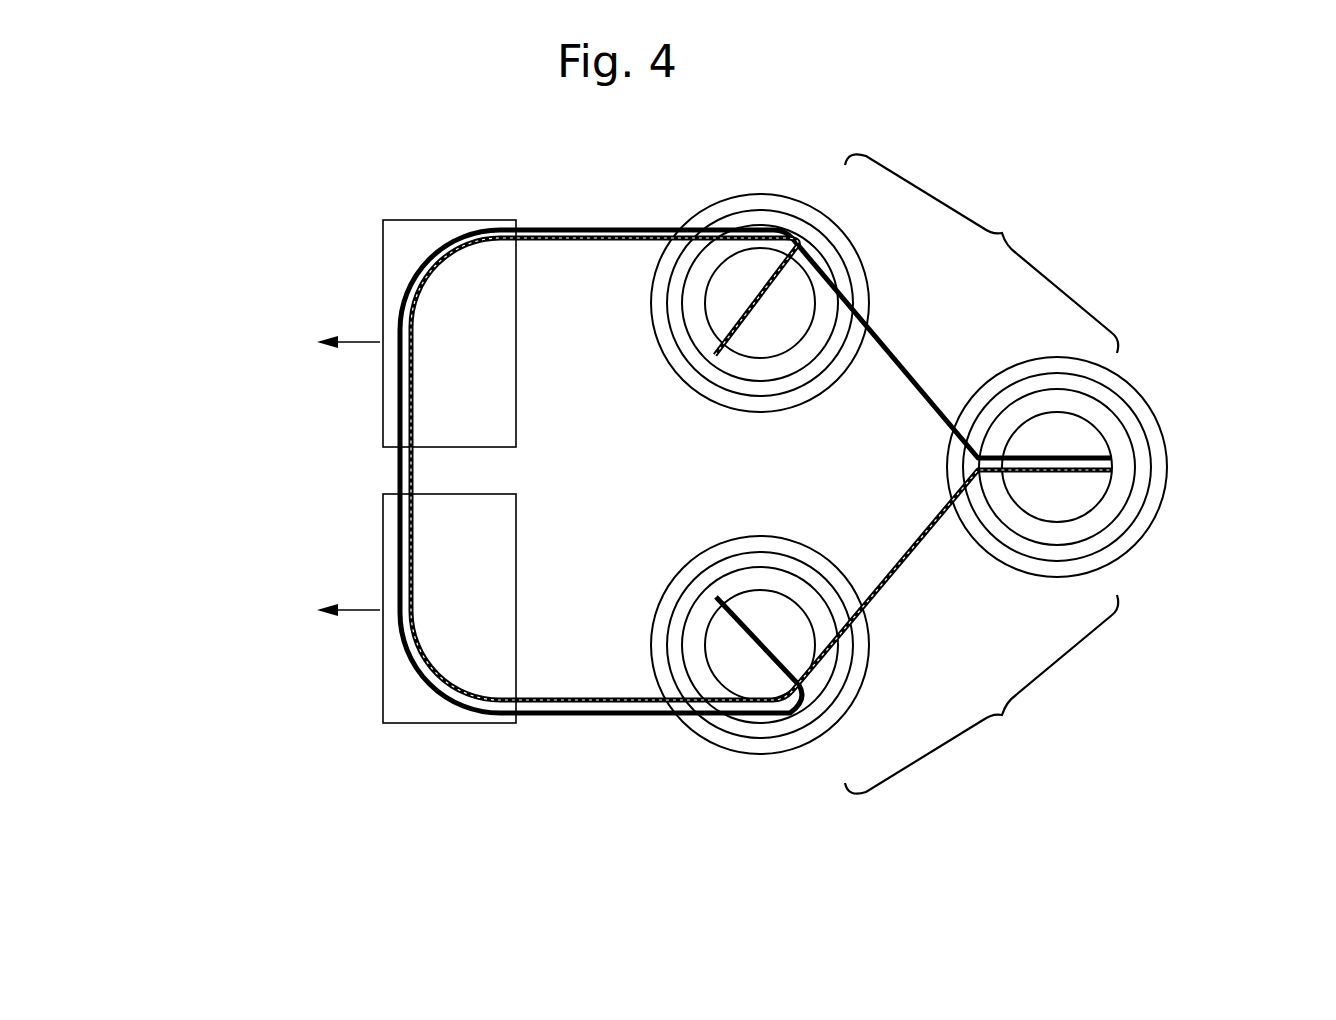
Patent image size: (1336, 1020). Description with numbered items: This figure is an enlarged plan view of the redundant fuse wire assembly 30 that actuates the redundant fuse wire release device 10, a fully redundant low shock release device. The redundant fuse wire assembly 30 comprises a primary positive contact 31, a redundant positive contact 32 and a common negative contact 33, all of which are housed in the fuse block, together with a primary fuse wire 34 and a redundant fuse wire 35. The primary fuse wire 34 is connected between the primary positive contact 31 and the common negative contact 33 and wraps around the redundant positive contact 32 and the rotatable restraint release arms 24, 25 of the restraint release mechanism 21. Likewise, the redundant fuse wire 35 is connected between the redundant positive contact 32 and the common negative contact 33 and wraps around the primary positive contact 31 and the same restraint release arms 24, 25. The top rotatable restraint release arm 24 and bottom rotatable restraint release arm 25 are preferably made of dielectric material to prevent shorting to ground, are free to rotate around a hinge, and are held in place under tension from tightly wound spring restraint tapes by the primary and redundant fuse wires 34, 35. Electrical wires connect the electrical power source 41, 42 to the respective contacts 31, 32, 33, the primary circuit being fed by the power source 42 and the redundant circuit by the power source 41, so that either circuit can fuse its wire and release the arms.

The redundant fuse wire release device 10 is at (150, 158).
The restraint release mechanism 21 is at (382, 778).
The top rotatable restraint release arm 24 is at (448, 723).
The bottom rotatable restraint release arm 25 is at (413, 219).
The redundant fuse wire assembly 30 is at (1190, 305).
The primary positive contact 31 is at (742, 195).
The redundant positive contact 32 is at (742, 757).
The common negative contact 33 is at (1145, 523).
The primary fuse wire 34 is at (895, 580).
The redundant fuse wire 35 is at (897, 363).
The electrical power source 41 is at (1003, 718).
The electrical power source 42 is at (1003, 232).